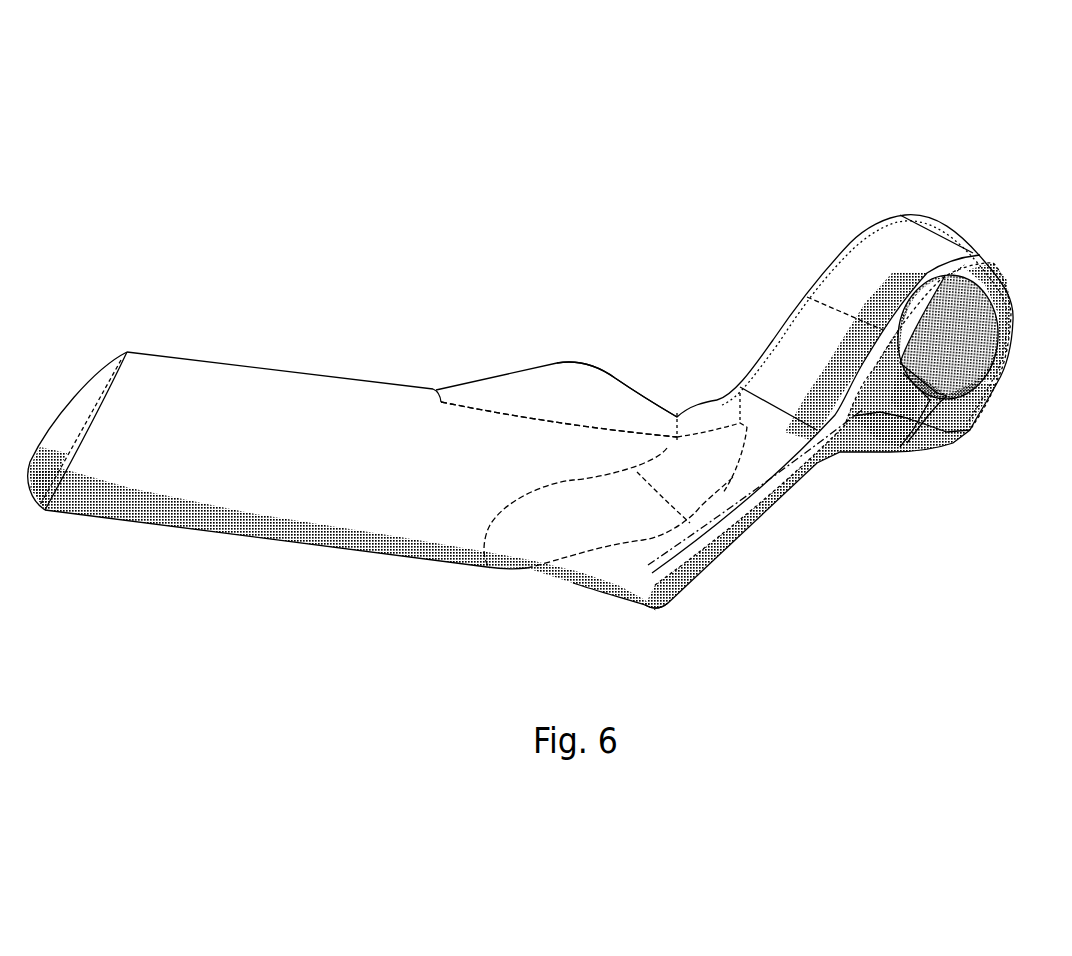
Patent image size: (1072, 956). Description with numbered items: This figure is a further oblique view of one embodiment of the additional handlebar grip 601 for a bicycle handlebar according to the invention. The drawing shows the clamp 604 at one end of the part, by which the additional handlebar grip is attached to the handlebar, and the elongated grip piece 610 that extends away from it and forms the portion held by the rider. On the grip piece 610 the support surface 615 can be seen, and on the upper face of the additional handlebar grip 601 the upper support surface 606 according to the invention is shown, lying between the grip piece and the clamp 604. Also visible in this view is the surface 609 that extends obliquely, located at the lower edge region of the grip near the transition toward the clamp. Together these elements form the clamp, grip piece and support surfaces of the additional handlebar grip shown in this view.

The additional handlebar grip 601 is at (404, 240).
The clamp 604 is at (958, 256).
The upper support surface 606 is at (692, 502).
The surface that extends obliquely 609 is at (690, 587).
The grip piece 610 is at (230, 365).
The support surface 615 is at (593, 383).